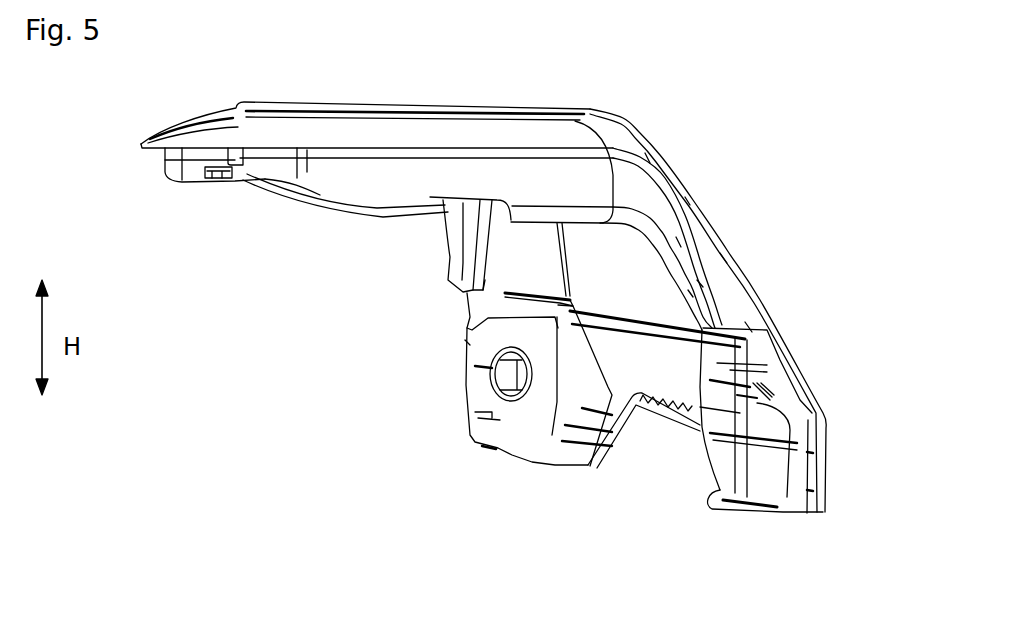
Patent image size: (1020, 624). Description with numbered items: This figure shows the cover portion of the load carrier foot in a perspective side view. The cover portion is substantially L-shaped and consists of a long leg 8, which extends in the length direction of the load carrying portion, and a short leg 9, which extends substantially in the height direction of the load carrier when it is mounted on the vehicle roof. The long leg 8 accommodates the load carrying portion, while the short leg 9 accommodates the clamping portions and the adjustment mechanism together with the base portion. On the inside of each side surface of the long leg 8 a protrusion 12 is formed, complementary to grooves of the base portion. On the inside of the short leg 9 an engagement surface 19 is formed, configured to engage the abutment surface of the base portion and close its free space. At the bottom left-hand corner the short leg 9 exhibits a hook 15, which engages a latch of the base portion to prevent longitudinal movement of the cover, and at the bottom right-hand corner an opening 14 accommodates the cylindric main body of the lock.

The long leg of the cover portion 8 is at (440, 178).
The short leg of the cover portion 9 is at (742, 310).
The protrusion 12 is at (213, 178).
The opening 14 is at (513, 373).
The hook 15 is at (752, 390).
The engagement surface 19 is at (465, 343).